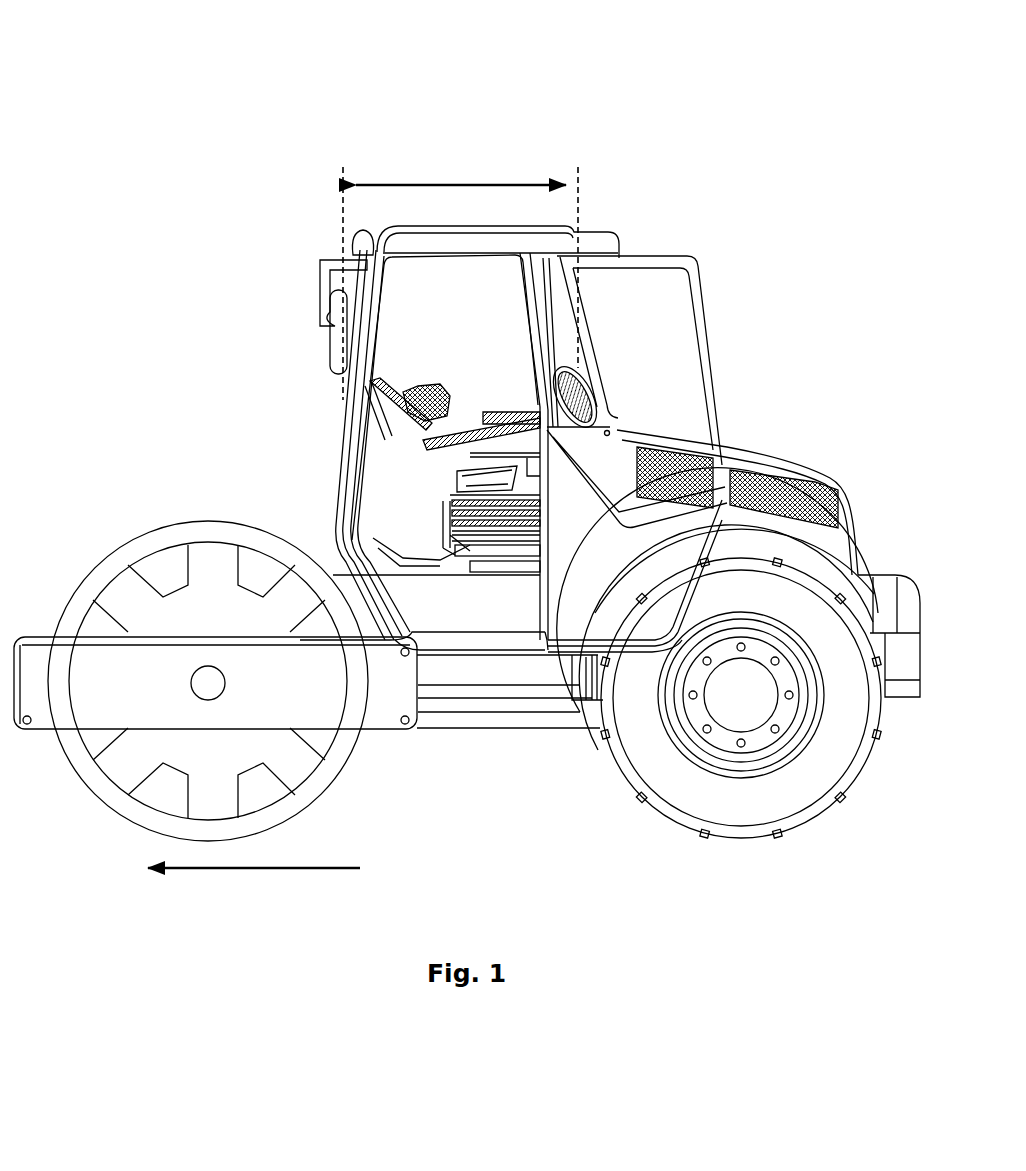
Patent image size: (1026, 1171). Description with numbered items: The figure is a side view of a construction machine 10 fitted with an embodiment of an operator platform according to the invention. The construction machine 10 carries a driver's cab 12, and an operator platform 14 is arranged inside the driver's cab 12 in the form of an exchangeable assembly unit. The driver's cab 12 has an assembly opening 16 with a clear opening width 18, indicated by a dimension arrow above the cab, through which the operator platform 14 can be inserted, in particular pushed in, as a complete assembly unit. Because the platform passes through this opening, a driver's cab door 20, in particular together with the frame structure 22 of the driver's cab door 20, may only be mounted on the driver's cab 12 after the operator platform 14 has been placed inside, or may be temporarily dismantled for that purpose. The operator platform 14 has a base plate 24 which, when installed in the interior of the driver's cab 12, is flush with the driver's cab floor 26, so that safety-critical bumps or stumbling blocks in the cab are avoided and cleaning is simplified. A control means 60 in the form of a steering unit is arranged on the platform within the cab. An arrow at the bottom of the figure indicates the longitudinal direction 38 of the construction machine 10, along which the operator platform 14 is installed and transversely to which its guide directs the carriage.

The construction machine 10 is at (182, 142).
The driver's cab 12 is at (597, 233).
The operator platform 14 is at (476, 481).
The assembly opening 16 is at (418, 322).
The clear opening width 18 is at (460, 277).
The driver's cab door 20 is at (670, 533).
The frame structure 22 is at (615, 409).
The base plate 24 is at (456, 567).
The driver's cab floor 26 is at (401, 572).
The longitudinal direction 38 is at (279, 871).
The control means 60 is at (378, 424).